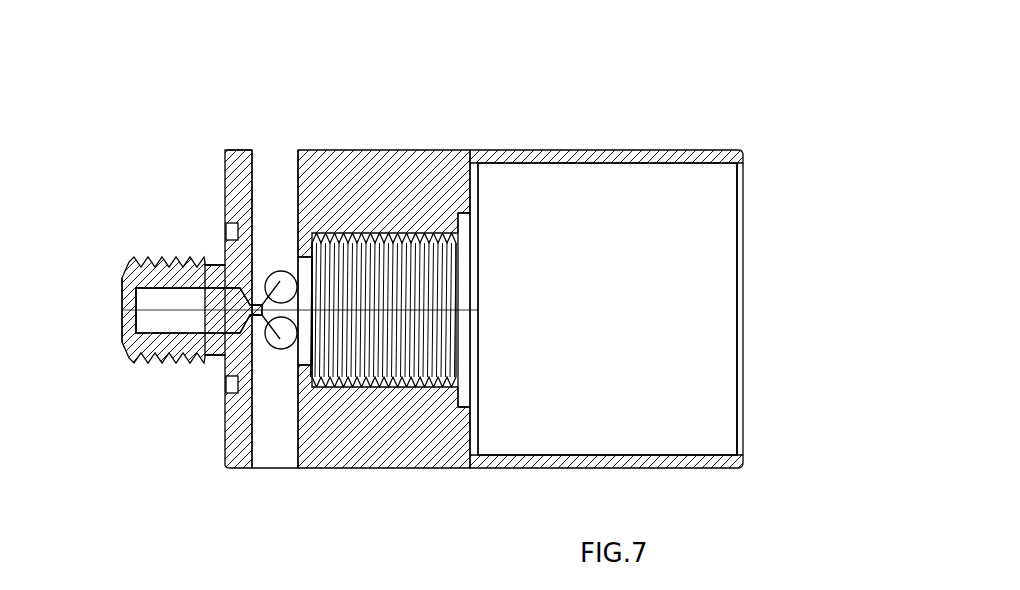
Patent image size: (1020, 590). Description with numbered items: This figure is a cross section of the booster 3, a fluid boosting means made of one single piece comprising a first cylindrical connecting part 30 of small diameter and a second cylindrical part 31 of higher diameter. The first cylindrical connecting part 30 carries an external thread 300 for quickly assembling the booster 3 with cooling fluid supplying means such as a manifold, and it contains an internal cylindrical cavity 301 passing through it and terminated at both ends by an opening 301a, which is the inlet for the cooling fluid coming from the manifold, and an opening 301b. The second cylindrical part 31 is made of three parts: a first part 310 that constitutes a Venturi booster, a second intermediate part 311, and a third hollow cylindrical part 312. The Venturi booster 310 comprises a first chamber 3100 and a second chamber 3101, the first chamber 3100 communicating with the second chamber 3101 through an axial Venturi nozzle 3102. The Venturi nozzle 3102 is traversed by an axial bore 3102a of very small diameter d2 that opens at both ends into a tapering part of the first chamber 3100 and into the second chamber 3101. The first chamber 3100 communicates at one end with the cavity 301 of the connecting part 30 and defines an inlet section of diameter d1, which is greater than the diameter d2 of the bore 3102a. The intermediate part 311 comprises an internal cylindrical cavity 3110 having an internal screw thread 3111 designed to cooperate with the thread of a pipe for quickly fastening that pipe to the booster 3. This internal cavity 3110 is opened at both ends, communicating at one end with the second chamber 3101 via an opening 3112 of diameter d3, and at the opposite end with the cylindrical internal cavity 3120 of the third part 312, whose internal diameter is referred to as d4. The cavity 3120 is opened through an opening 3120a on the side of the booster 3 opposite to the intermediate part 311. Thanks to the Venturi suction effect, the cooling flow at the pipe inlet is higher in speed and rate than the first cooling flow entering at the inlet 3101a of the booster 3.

The booster 3 is at (172, 148).
The second cylindrical part 31 is at (228, 70).
The first part (Venturi booster) 310 is at (300, 138).
The second intermediate part 311 is at (476, 138).
The third hollow cylindrical part 312 is at (742, 138).
The first chamber 3100 is at (227, 386).
The second chamber 3101 is at (226, 467).
The inlet 3101a is at (297, 470).
The axial Venturi nozzle 3102 is at (283, 338).
The axial bore 3102a is at (272, 350).
The internal cylindrical cavity 3110 is at (470, 422).
The internal screw thread 3111 is at (370, 388).
The opening 3112 is at (305, 243).
The cylindrical internal cavity 3120 is at (623, 321).
The opening 3120a is at (742, 444).
The external thread 300 is at (135, 242).
The first cylindrical connecting part 30 is at (205, 367).
The internal cylindrical cavity 301 is at (115, 341).
The opening 301a is at (122, 296).
The opening 301b is at (223, 297).
The inlet section diameter d1 is at (92, 333).
The bore diameter d2 is at (302, 277).
The opening diameter d3 is at (299, 262).
The cavity internal diameter d4 is at (745, 163).